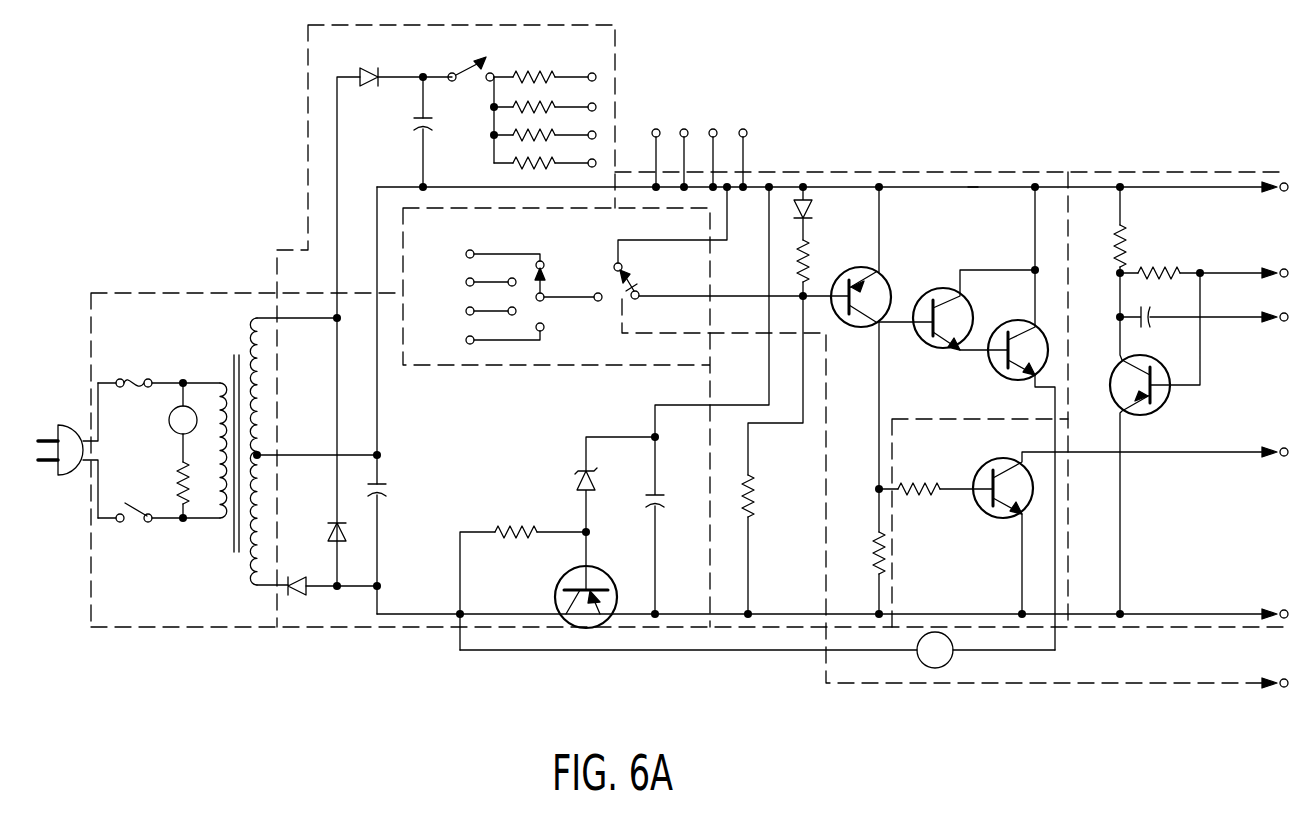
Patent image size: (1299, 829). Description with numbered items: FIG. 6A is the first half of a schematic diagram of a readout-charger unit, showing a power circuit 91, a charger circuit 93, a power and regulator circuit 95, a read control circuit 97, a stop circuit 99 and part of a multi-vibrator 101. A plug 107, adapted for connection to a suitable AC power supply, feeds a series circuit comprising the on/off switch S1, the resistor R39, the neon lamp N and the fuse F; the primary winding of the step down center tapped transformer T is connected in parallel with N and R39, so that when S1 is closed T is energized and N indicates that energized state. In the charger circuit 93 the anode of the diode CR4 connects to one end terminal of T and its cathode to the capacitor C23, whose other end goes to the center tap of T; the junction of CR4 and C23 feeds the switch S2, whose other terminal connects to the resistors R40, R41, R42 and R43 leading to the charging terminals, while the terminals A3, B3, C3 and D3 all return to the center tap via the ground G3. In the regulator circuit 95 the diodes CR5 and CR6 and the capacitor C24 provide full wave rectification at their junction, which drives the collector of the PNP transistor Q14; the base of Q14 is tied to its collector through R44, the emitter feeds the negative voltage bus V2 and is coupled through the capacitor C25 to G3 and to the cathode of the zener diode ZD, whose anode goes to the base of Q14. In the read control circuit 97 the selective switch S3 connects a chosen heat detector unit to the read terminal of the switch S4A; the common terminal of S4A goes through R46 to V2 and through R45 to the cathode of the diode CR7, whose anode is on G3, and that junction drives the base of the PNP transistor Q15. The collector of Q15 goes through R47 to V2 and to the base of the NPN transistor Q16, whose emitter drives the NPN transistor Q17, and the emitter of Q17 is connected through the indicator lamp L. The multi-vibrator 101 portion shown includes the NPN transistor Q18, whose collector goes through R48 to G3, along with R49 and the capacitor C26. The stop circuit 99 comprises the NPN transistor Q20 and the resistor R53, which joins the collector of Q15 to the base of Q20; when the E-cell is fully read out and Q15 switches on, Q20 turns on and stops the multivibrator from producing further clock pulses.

The power circuit 91 is at (200, 610).
The charger circuit 93 is at (326, 157).
The power and regulator circuit 95 is at (407, 592).
The read control circuit 97 is at (857, 208).
The stop circuit 99 is at (1038, 603).
The multi-vibrator 101 is at (1205, 595).
The plug 107 is at (73, 426).
The fuse F is at (159, 367).
The neon lamp N is at (169, 420).
The resistor R39 is at (168, 492).
The on/off switch S1 is at (159, 501).
The step down center tapped transformer T is at (296, 449).
The diode CR4 is at (394, 182).
The diode CR5 is at (331, 576).
The diode CR6 is at (315, 452).
The diode CR7 is at (821, 211).
The capacitor C23 is at (404, 134).
The capacitor C24 is at (390, 400).
The capacitor C25 is at (645, 527).
The capacitor C26 is at (1202, 309).
The single pole, single throw switch S2 is at (471, 62).
The selective switch S3 is at (603, 323).
The half of double pole, double throw switch S4A is at (604, 240).
The resistor R40 is at (555, 69).
The resistor R41 is at (513, 104).
The resistor R42 is at (513, 132).
The resistor R43 is at (513, 160).
The resistor R44 is at (525, 559).
The resistor R45 is at (824, 270).
The resistor R46 is at (772, 457).
The resistor R47 is at (862, 551).
The resistor R48 is at (1101, 250).
The resistor R49 is at (1204, 262).
The resistor R53 is at (936, 480).
The terminal A3 is at (654, 148).
The terminal B3 is at (683, 148).
The terminal C3 is at (712, 148).
The terminal D3 is at (743, 148).
The ground G3 is at (972, 187).
The PNP transistor Q14 is at (576, 580).
The PNP transistor Q15 is at (875, 336).
The NPN transistor Q16 is at (959, 308).
The NPN transistor Q17 is at (1021, 416).
The NPN transistor Q18 is at (1155, 445).
The NPN transistor Q20 is at (1125, 532).
The zener diode ZD is at (574, 486).
The indicator lamp L is at (943, 664).
The negative voltage bus V2 is at (696, 612).